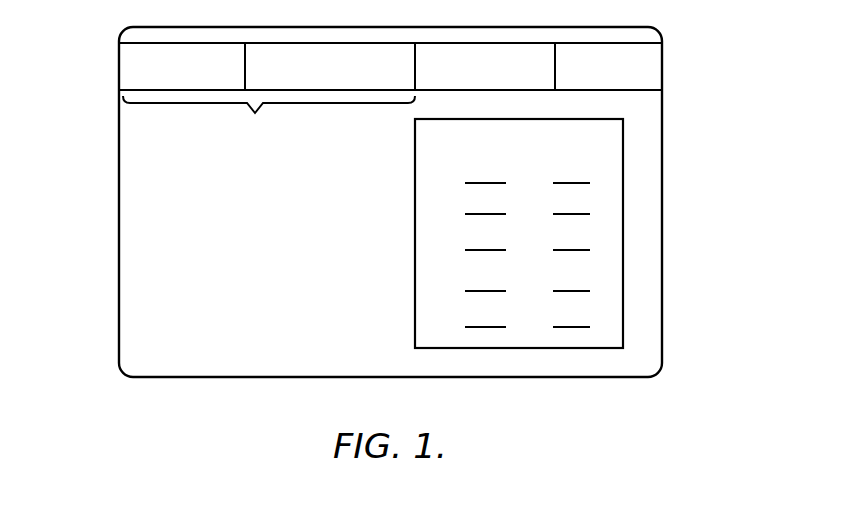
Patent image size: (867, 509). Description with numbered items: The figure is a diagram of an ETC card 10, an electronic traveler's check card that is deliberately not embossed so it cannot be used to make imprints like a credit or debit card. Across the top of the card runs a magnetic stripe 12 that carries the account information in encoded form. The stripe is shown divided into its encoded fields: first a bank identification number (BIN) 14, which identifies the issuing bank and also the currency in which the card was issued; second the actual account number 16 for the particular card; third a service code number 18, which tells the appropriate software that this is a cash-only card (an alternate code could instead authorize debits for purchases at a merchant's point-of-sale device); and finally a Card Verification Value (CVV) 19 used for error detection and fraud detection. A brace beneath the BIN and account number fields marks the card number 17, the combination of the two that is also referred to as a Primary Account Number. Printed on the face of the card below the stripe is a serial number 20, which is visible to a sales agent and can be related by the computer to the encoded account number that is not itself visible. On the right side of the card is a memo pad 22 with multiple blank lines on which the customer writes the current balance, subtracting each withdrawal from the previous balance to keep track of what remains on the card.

The ETC card 10 is at (716, 41).
The magnetic stripe 12 is at (98, 72).
The bank identification number (BIN) 14 is at (203, 43).
The account number 16 is at (347, 43).
The card number 17 is at (256, 114).
The service code number 18 is at (497, 43).
The Card Verification Value (CVV) 19 is at (604, 43).
The serial number 20 is at (172, 323).
The memo pad 22 is at (614, 162).